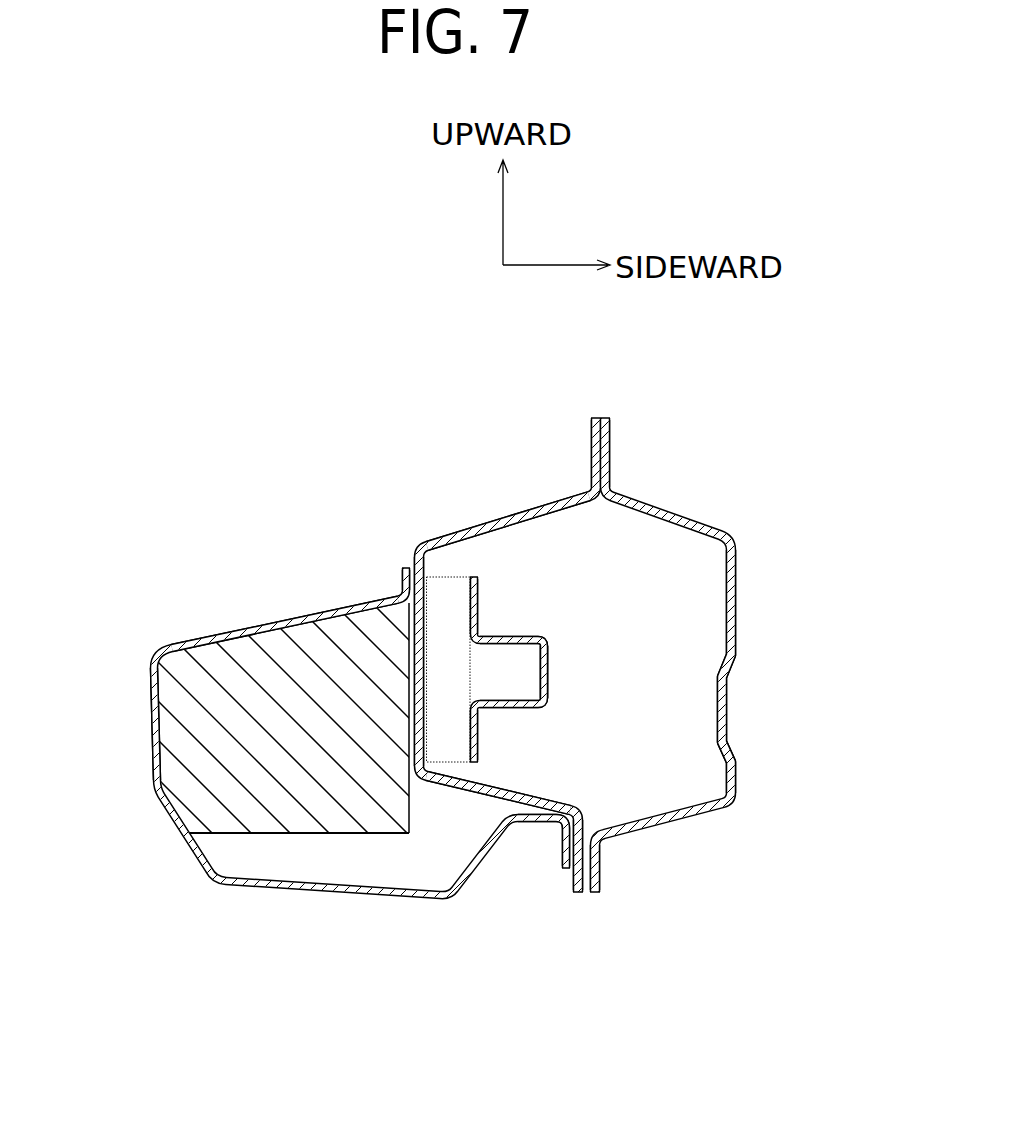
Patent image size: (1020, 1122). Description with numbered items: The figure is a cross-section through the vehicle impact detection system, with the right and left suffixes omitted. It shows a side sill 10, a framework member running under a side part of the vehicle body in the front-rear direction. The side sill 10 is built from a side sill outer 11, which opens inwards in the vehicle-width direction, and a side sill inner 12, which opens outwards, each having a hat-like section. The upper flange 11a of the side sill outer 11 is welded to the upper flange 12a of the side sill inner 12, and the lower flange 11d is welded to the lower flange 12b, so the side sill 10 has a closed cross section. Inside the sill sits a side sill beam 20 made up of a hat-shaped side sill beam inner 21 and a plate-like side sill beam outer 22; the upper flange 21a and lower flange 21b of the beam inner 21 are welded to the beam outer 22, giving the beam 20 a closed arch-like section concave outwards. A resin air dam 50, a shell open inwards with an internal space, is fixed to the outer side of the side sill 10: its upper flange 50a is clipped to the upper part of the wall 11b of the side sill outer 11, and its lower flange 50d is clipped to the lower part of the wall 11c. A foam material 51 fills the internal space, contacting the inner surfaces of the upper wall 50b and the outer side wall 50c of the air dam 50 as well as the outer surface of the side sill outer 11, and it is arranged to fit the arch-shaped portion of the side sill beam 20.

The side sill 10 is at (722, 396).
The side sill outer 11 is at (498, 504).
The upper flange of side sill outer 11a is at (592, 434).
The wall of side sill outer 11b is at (442, 566).
The wall of side sill outer 11c is at (534, 818).
The lower flange of side sill outer 11d is at (584, 878).
The side sill inner 12 is at (749, 570).
The upper flange of side sill inner 12a is at (613, 430).
The lower flange of side sill inner 12b is at (604, 877).
The side sill beam 20 is at (621, 662).
The side sill beam inner 21 is at (557, 641).
The upper flange of side sill beam inner 21a is at (482, 593).
The lower flange of side sill beam inner 21b is at (482, 740).
The side sill beam outer 22 is at (453, 685).
The air dam 50 is at (165, 815).
The upper flange of air dam 50a is at (400, 572).
The upper wall of air dam 50b is at (266, 626).
The wall of air dam 50c is at (160, 730).
The lower flange of air dam 50d is at (578, 806).
The foam material 51 is at (312, 797).